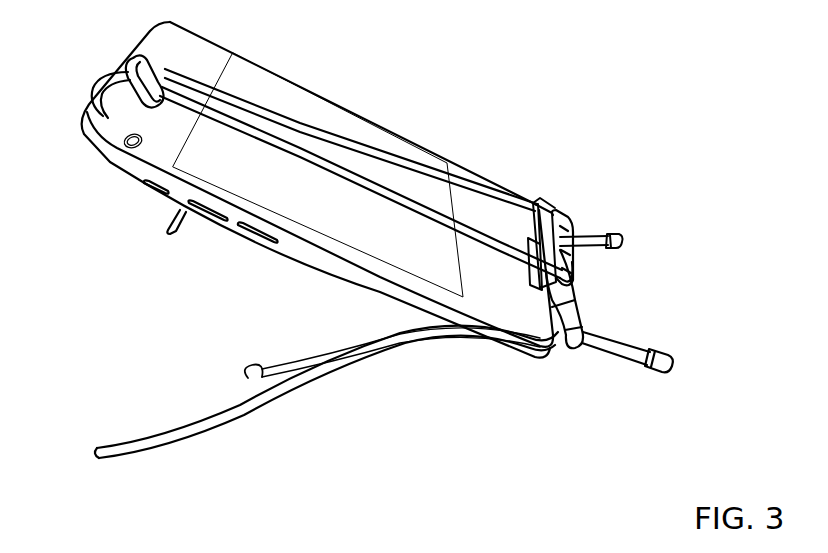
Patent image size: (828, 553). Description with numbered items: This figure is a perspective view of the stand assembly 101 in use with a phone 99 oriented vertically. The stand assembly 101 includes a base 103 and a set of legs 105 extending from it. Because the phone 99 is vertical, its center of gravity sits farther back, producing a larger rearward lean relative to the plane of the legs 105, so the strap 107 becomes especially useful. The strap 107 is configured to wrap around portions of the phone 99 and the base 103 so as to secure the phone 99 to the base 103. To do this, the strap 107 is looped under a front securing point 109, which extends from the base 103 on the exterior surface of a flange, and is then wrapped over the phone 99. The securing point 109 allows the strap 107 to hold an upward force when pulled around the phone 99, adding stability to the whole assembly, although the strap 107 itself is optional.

The stand assembly 101 is at (126, 304).
The phone 99 is at (438, 263).
The strap 107 is at (100, 78).
The securing point 109 is at (573, 264).
The base 103 is at (572, 304).
The legs 105 is at (590, 236).